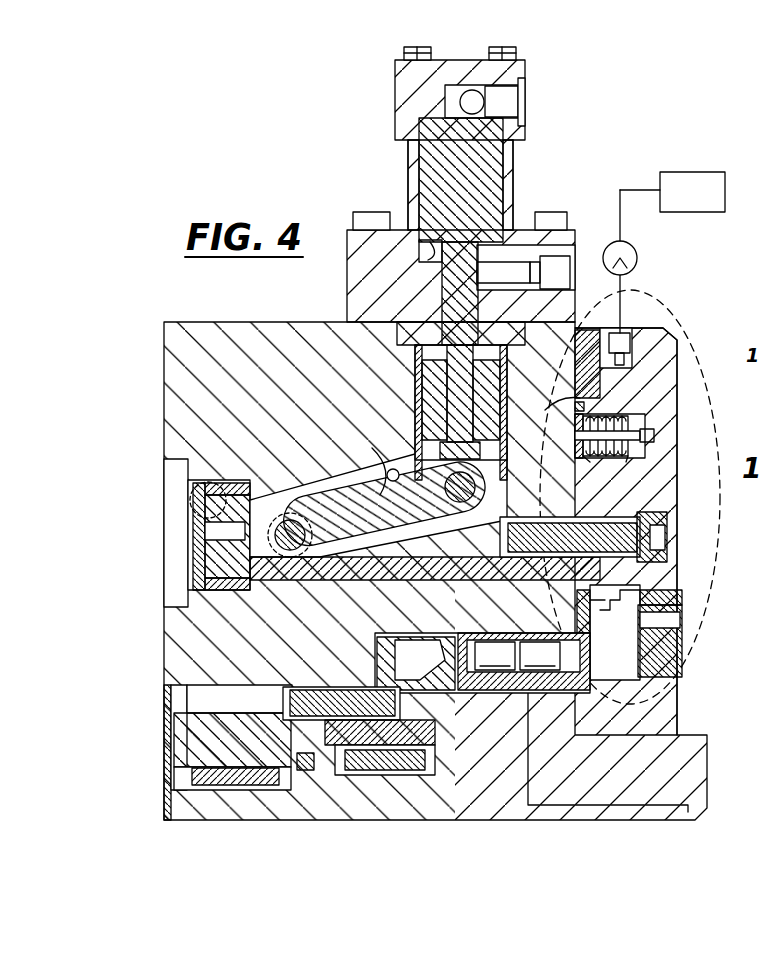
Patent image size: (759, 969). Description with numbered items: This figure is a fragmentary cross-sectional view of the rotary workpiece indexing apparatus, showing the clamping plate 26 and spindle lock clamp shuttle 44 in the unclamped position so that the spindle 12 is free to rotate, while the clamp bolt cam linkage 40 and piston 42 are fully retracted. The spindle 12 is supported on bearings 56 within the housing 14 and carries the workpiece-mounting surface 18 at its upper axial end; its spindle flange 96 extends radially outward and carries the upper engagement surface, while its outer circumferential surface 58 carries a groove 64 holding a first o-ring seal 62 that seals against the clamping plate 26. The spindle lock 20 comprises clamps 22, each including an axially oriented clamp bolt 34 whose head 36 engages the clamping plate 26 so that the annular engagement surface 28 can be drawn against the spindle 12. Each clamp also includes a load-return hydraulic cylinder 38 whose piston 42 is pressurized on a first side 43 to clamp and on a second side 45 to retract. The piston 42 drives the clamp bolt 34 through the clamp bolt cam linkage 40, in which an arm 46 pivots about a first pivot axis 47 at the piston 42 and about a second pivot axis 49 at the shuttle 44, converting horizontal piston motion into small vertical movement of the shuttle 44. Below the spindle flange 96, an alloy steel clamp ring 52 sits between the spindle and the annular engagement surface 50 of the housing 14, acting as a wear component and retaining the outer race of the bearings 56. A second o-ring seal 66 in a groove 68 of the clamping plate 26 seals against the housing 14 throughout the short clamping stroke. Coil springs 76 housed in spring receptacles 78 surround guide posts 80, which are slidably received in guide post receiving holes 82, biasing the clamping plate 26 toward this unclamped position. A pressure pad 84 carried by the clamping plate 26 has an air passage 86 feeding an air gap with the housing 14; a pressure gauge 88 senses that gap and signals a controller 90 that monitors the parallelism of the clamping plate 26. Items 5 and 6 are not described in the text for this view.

The roller pin assembly 5 is at (190, 476).
The lever arm 6 is at (363, 484).
The spindle 12 is at (472, 792).
The housing 14 is at (205, 365).
The workpiece-mounting surface 18 is at (690, 350).
The spindle lock 20 is at (537, 178).
The clamps 22 is at (537, 178).
The clamping plate 26 is at (648, 345).
The annular engagement surface 28 is at (668, 640).
The clamp bolts 34 is at (585, 523).
The heads 36 is at (652, 520).
The hydraulic cylinders 38 is at (515, 155).
The clamp bolt cam linkage 40 is at (455, 500).
The piston 42 is at (478, 138).
The first side of piston 43 is at (455, 110).
The spindle lock clamp shuttle 44 is at (412, 560).
The second side of piston 45 is at (428, 255).
The arm 46 is at (330, 495).
The first pivot axis 47 is at (460, 502).
The second pivot axis 49 is at (290, 550).
The annular engagement surface of housing 50 is at (555, 630).
The clamp ring 52 is at (590, 620).
The bearings 56 is at (490, 660).
The outer circumferential surface 58 is at (648, 590).
The first o-ring seal 62 is at (682, 598).
The groove 64 is at (682, 617).
The second o-ring seal 66 is at (576, 405).
The groove 68 is at (586, 410).
The coil springs 76 is at (626, 453).
The spring receptacles 78 is at (586, 456).
The clamping plate guide posts 80 is at (637, 428).
The guide post receiving holes 82 is at (655, 435).
The pressure pads 84 is at (603, 380).
The air passage 86 is at (638, 350).
The pressure gauges 88 is at (615, 243).
The controller 90 is at (714, 172).
The spindle flange 96 is at (596, 600).